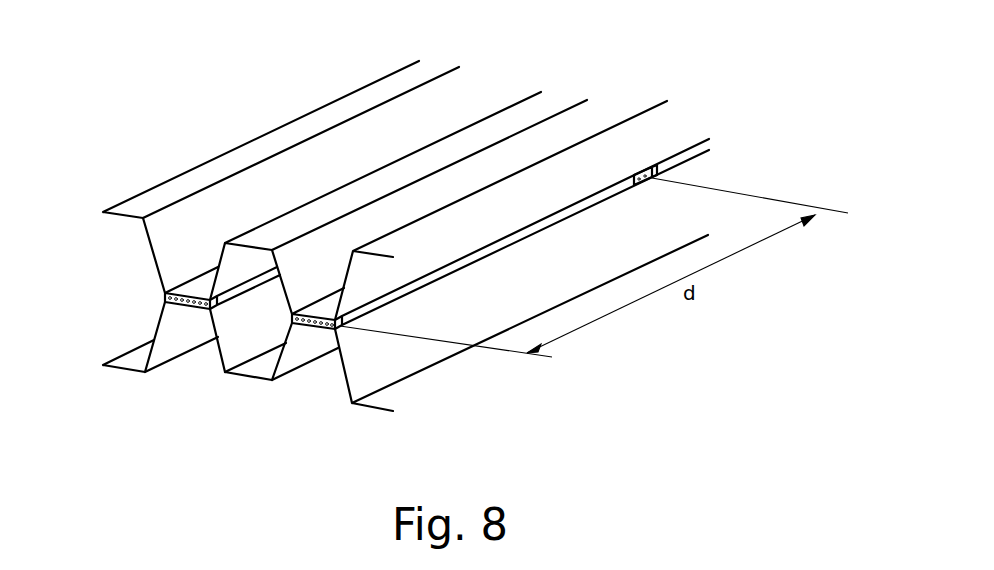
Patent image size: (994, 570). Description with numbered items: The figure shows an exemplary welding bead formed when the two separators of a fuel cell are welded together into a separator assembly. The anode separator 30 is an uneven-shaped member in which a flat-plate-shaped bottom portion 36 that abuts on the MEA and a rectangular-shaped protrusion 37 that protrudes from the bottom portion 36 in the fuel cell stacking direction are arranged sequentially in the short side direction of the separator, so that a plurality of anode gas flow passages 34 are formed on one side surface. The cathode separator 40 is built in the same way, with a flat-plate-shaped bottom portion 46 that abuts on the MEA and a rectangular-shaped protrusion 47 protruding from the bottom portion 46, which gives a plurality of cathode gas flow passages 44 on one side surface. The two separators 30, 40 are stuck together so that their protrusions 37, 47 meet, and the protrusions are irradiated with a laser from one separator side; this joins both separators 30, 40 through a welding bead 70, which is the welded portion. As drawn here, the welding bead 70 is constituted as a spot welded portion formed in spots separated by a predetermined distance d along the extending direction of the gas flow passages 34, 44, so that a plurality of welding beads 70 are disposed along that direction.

The anode separator 30 is at (127, 179).
The anode gas flow passages 34 is at (445, 195).
The bottom portion 36 is at (320, 212).
The protrusion 37 is at (202, 286).
The cathode separator 40 is at (97, 382).
The cathode gas flow passages 44 is at (320, 349).
The bottom portion 46 is at (245, 381).
The protrusion 47 is at (400, 290).
The welding bead 70 is at (177, 307).